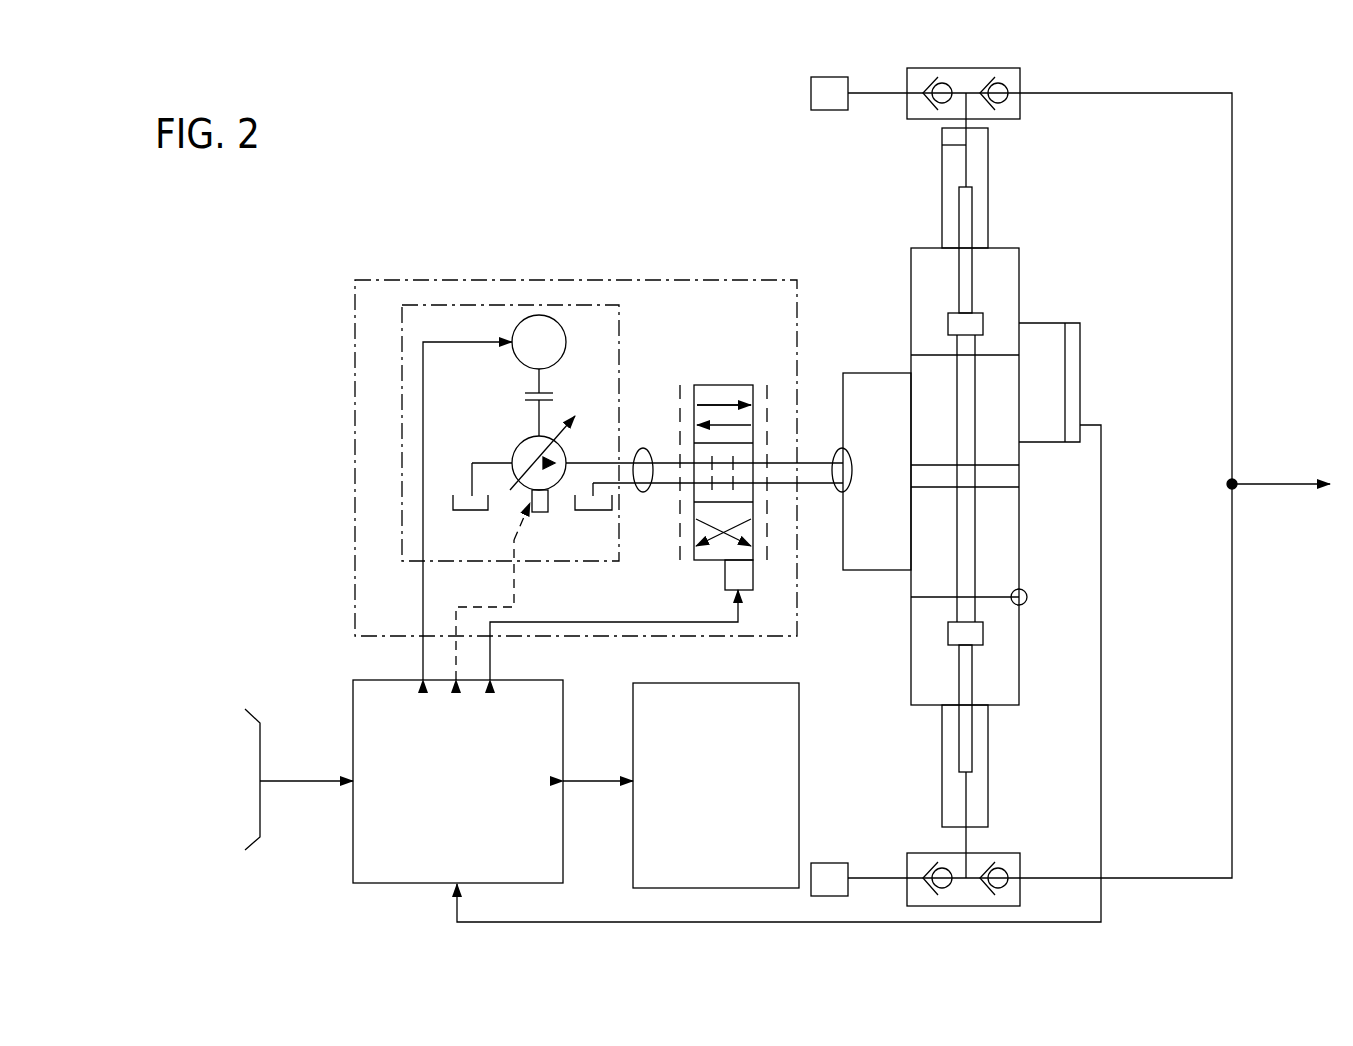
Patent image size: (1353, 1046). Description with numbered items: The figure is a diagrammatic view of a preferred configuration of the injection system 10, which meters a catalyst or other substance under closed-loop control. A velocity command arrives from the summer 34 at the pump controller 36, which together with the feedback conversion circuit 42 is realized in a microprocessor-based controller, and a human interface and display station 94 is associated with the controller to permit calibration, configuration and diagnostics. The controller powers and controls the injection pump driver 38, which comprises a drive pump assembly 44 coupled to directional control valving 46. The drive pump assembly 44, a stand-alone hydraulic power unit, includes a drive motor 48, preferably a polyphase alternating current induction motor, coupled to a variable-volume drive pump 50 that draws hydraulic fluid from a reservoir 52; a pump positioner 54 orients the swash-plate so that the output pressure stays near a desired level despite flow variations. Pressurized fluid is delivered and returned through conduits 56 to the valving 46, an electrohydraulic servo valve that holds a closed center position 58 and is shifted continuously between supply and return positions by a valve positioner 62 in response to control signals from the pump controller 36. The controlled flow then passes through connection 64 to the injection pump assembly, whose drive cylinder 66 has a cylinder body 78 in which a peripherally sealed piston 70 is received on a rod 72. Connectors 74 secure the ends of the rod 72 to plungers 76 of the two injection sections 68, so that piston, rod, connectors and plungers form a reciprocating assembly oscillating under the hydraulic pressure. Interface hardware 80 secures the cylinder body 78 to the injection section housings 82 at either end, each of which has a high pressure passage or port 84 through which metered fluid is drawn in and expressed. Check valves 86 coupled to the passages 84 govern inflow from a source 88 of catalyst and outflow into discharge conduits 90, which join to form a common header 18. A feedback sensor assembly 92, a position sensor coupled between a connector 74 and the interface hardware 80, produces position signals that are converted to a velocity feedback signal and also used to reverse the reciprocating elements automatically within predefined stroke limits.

The injection system 10 is at (608, 215).
The common header 18 is at (1258, 484).
The summer 34 is at (205, 812).
The injection pump controller 36 is at (398, 775).
The feedback conversion circuit 42 is at (353, 700).
The injection pump driver 38 is at (355, 324).
The drive pump assembly 44 is at (402, 416).
The directional control valving 46 is at (747, 385).
The drive motor 48 is at (566, 348).
The drive pump 50 is at (517, 446).
The reservoir 52 is at (483, 511).
The pump positioner 54 is at (548, 500).
The conduits 56 is at (645, 448).
The valve position 58 is at (695, 501).
The valve positioner 62 is at (757, 578).
The pressure sensor 64 is at (849, 454).
The drive cylinder 66 is at (1020, 567).
The injection sections 68 is at (1020, 275).
The piston 70 is at (1003, 477).
The rod 72 is at (955, 398).
The connectors 74 is at (983, 318).
The plungers 76 is at (975, 218).
The cylinder body 78 is at (1021, 535).
The interface hardware 80 is at (1028, 602).
The injection section housings 82 is at (989, 141).
The high pressure discharge passage 84 is at (942, 145).
The check valves 86 is at (942, 68).
The source of metered fluid 88 is at (820, 77).
The discharge conduit 90 is at (1075, 93).
The feedback sensor assembly 92 is at (1082, 355).
The human interface and display station 94 is at (800, 730).